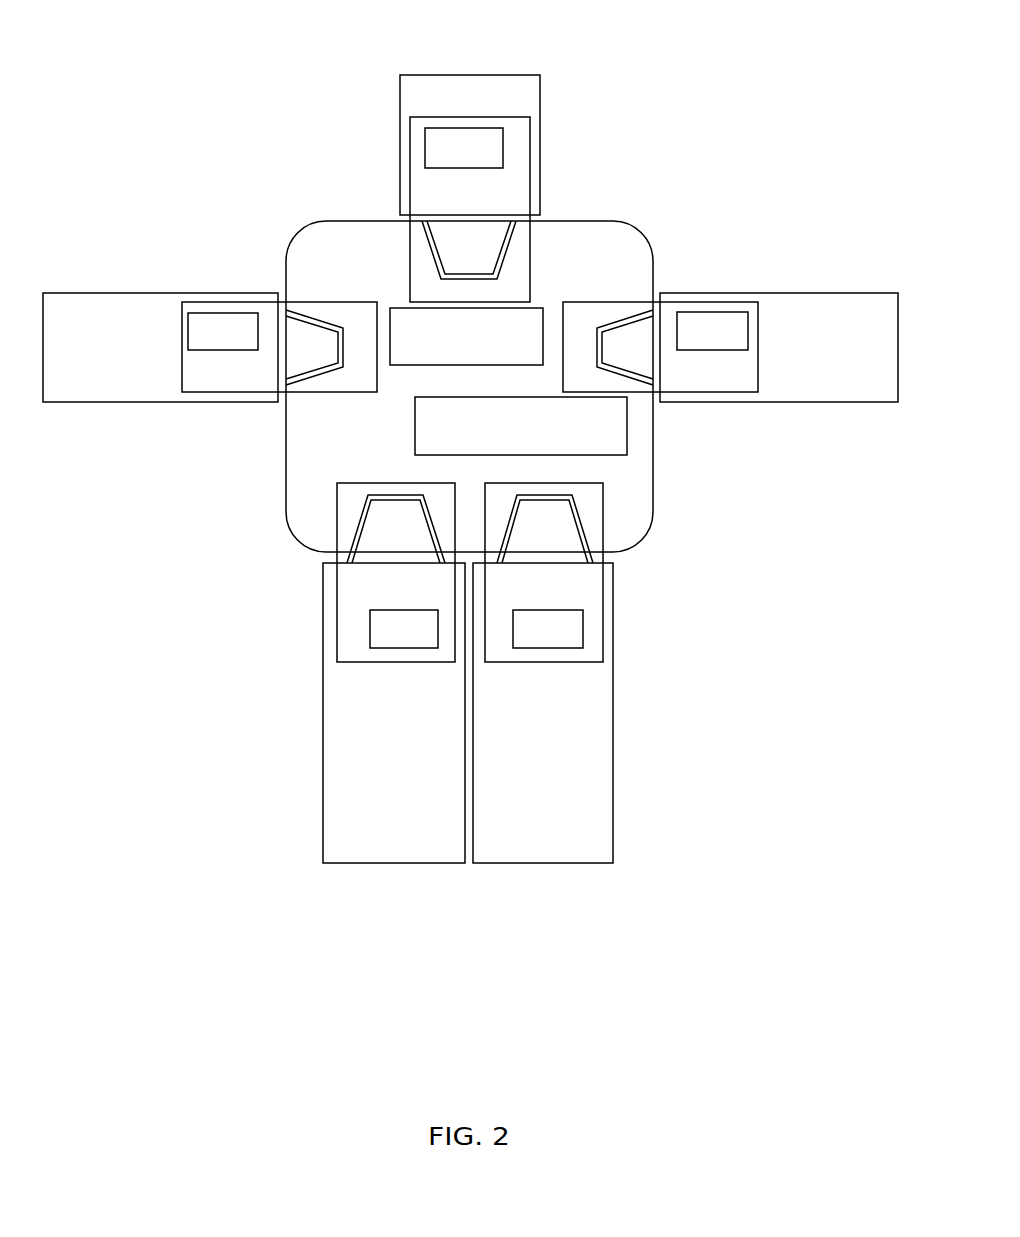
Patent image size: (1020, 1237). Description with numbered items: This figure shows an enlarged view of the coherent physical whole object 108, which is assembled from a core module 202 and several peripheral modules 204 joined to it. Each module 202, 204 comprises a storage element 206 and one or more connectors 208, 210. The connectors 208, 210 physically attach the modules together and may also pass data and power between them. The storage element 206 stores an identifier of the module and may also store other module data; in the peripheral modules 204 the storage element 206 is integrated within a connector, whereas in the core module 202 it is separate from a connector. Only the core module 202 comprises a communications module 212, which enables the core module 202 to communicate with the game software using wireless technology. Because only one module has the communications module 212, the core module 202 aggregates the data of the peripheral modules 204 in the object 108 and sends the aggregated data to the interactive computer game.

The coherent physical whole object 108 is at (632, 90).
The core module 202 is at (640, 221).
The peripheral module 204 is at (462, 75).
The storage element 206 is at (258, 330).
The connector 208 is at (318, 297).
The connector 210 is at (182, 378).
The communications module 212 is at (500, 455).